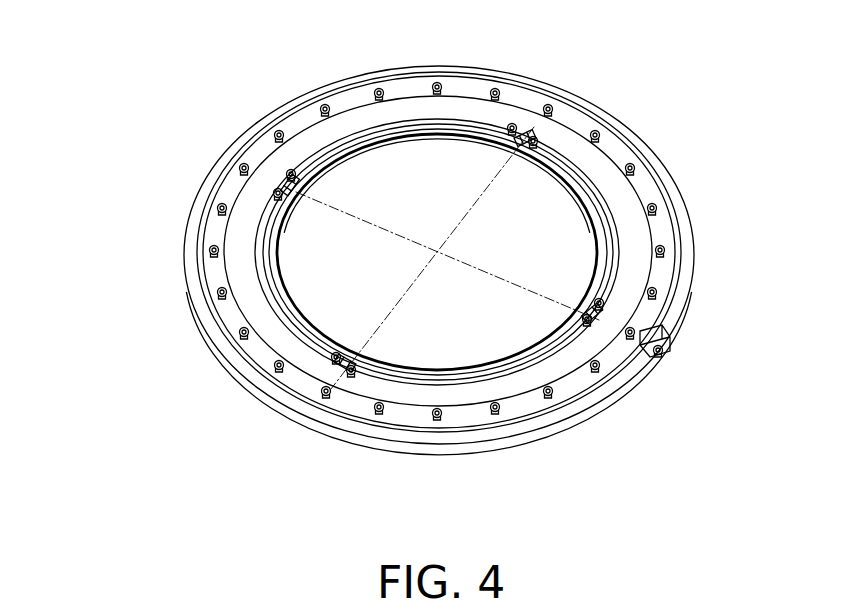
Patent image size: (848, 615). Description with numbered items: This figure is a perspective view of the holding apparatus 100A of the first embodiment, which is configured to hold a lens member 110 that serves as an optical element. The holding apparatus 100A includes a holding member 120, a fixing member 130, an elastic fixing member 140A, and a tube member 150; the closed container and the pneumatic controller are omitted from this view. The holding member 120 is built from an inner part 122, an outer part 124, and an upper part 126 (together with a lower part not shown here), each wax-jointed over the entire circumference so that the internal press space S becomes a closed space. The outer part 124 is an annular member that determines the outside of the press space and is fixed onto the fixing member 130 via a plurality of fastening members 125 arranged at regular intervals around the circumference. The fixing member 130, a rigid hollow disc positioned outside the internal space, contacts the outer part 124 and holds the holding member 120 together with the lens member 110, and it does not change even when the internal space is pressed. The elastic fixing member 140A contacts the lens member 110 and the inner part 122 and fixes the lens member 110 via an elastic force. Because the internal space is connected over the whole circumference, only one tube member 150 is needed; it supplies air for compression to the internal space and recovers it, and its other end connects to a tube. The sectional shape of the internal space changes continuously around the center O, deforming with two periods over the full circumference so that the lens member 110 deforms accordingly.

The holding apparatus 100A is at (604, 97).
The lens member 110 is at (385, 190).
The holding member 120 is at (72, 230).
The inner part 122 is at (262, 199).
The outer part 124 is at (212, 270).
The fastening members 125 is at (429, 77).
The upper part 126 is at (230, 220).
The fixing member 130 is at (234, 365).
The elastic fixing member 140A is at (282, 170).
The tube member 150 is at (647, 336).